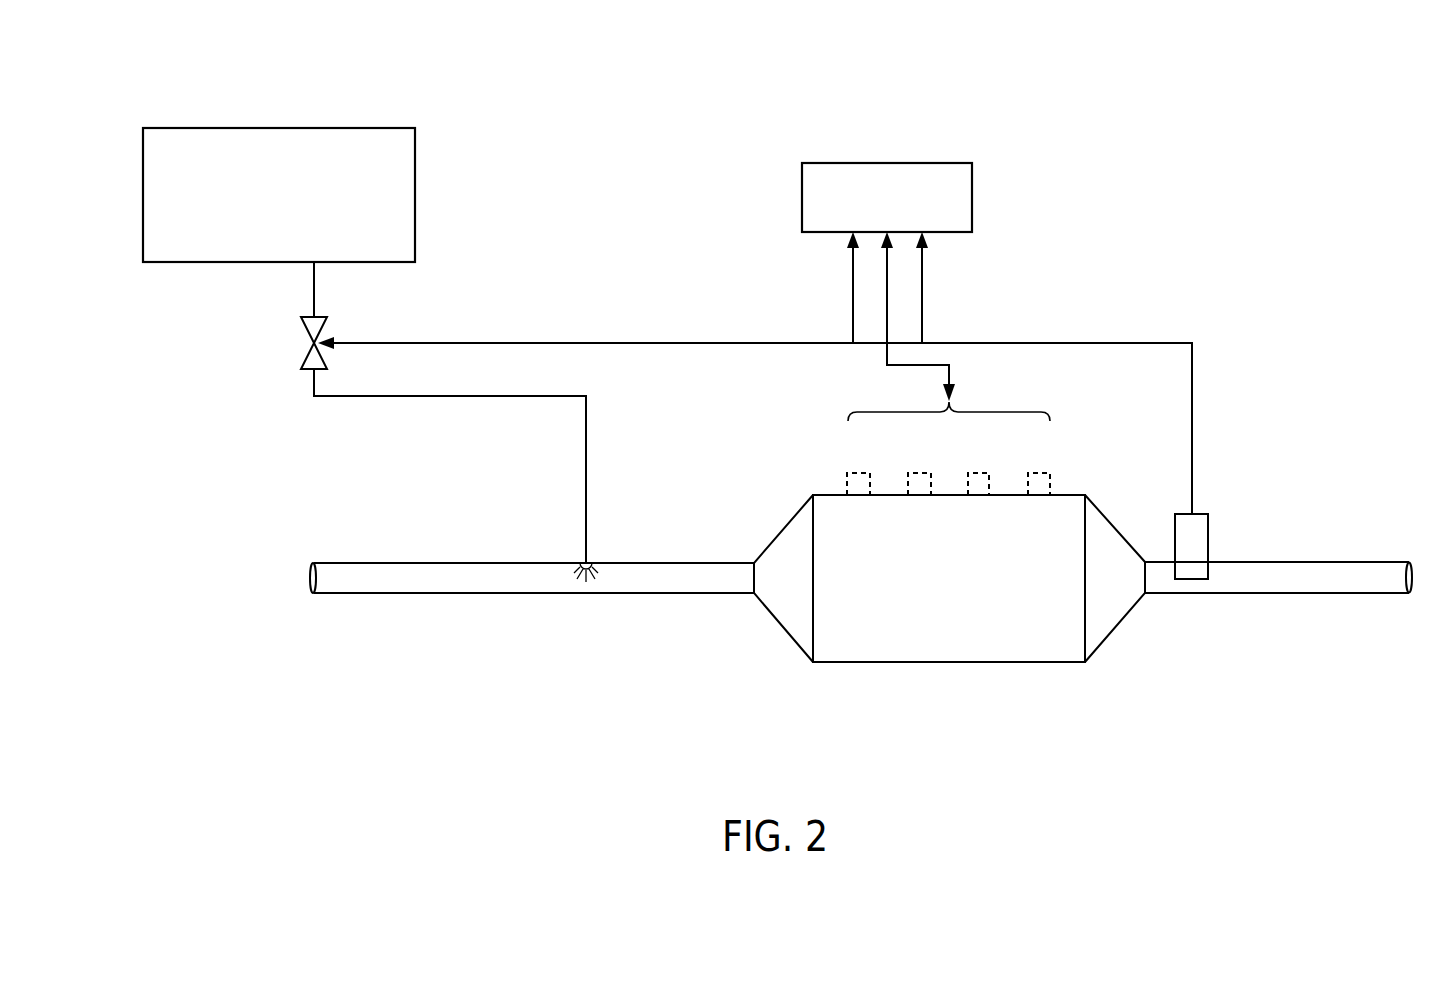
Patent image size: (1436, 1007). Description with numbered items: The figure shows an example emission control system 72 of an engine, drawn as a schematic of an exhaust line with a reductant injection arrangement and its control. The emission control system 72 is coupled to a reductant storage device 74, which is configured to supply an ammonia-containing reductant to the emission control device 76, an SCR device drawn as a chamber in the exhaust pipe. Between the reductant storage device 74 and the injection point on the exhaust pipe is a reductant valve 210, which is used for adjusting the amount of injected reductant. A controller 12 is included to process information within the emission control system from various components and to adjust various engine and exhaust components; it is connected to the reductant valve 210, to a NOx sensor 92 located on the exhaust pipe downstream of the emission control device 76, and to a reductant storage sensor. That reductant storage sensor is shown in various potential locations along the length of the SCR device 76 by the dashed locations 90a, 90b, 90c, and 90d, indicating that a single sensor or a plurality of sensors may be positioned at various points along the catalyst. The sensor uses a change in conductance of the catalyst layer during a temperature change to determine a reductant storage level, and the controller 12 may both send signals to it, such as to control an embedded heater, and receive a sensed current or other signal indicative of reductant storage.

The emission control system 72 is at (1195, 176).
The reductant storage device 74 is at (280, 128).
The controller 12 is at (888, 163).
The reductant valve 210 is at (307, 357).
The emission control device 76 is at (950, 662).
The dashed location of reductant storage sensor 90a is at (856, 473).
The dashed location of reductant storage sensor 90b is at (916, 473).
The dashed location of reductant storage sensor 90c is at (982, 473).
The dashed location of reductant storage sensor 90d is at (1042, 473).
The NOx sensor 92 is at (1210, 539).